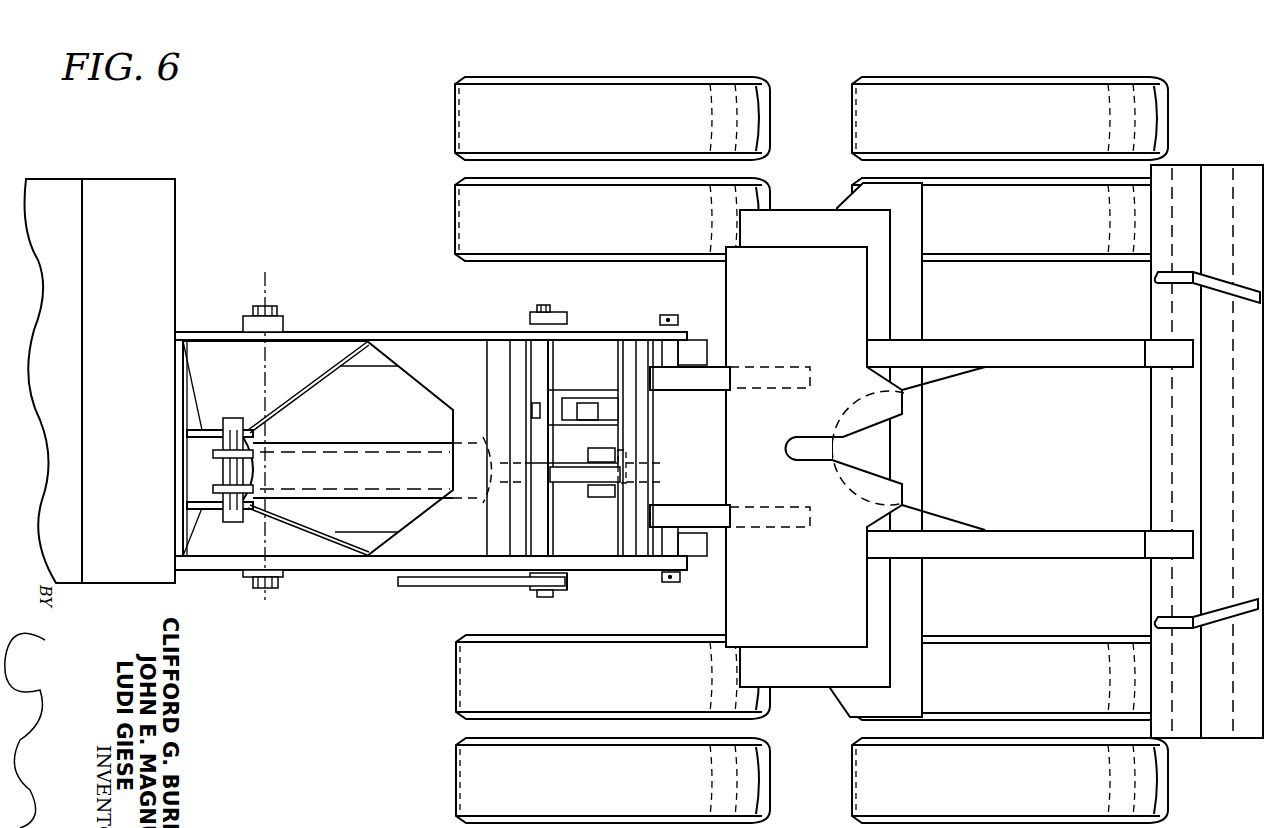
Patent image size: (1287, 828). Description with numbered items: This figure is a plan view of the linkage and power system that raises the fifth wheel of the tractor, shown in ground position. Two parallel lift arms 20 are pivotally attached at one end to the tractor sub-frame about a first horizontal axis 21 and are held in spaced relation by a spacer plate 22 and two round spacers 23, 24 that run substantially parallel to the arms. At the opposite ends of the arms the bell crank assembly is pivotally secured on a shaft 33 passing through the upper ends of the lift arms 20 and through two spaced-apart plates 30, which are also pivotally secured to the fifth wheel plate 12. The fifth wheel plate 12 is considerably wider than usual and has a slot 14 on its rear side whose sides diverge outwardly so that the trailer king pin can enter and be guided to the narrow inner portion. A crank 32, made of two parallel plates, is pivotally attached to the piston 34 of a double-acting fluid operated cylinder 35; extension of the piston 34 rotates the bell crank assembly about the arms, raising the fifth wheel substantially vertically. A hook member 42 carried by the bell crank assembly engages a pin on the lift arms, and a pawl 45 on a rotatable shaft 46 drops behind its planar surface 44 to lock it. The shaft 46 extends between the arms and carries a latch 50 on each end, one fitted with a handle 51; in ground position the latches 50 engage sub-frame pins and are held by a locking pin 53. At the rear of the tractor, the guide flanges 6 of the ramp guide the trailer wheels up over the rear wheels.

The guide flanges 6 is at (1238, 297).
The fifth wheel plate 12 is at (815, 447).
The slot 14 is at (808, 442).
The lift arms 20 is at (428, 330).
The first horizontal axis 21 is at (266, 298).
The spacer plate 22 is at (323, 448).
The round spacer 23 is at (520, 448).
The round spacer 24 is at (662, 448).
The plates 30 is at (698, 384).
The crank 32 is at (592, 498).
The shaft 33 is at (672, 313).
The piston 34 is at (562, 476).
The double-acting fluid operated cylinder 35 is at (367, 470).
The hook member 42 is at (600, 405).
The planar surface 44 is at (580, 418).
The pawl 45 is at (553, 404).
The rotatable shaft 46 is at (549, 357).
The latch 50 is at (560, 312).
The handle 51 is at (440, 586).
The locking pin 53 is at (569, 588).